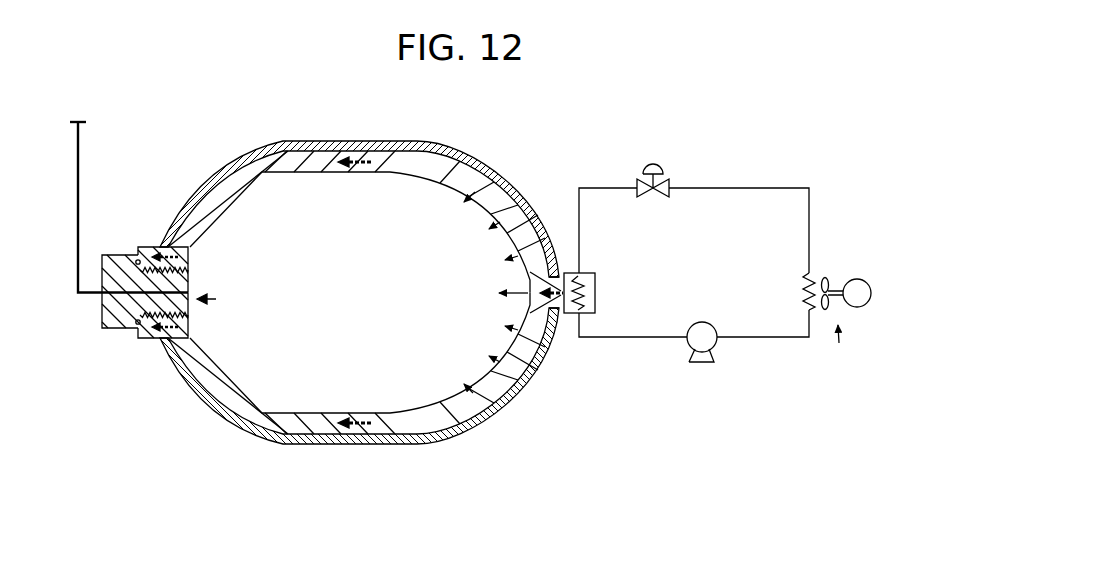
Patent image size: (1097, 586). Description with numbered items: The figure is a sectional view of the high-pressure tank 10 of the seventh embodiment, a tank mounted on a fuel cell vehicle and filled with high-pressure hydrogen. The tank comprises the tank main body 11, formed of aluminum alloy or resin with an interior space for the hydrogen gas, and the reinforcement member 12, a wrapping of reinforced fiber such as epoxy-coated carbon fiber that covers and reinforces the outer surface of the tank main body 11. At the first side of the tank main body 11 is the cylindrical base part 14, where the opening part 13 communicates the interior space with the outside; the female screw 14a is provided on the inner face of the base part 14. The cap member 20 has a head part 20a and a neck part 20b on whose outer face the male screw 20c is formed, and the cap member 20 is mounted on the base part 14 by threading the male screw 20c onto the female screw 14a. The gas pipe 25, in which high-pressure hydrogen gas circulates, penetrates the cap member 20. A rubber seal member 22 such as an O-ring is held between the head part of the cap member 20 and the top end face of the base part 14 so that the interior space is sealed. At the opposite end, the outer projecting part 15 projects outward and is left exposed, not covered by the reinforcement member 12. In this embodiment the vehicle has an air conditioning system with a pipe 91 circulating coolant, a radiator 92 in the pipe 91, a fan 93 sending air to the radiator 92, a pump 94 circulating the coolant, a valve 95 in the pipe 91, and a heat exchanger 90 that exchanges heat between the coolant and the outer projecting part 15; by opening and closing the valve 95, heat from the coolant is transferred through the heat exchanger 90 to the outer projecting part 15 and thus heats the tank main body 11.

The high-pressure tank 10 is at (339, 110).
The tank main body 11 is at (515, 183).
The reinforcement member 12 is at (478, 163).
The opening part 13 is at (216, 299).
The base part 14 is at (149, 344).
The female screw 14a is at (172, 302).
The outer projecting part 15 is at (558, 312).
The cap member 20 is at (131, 262).
The head part 20a is at (105, 314).
The neck part 20b is at (175, 281).
The male screw 20c is at (173, 268).
The seal member 22 is at (138, 325).
The gas pipe 25 is at (79, 148).
The heat exchanger 90 is at (596, 289).
The pipe 91 is at (720, 188).
The radiator 92 is at (803, 293).
The fan 93 is at (840, 343).
The pump 94 is at (706, 321).
The valve 95 is at (660, 199).